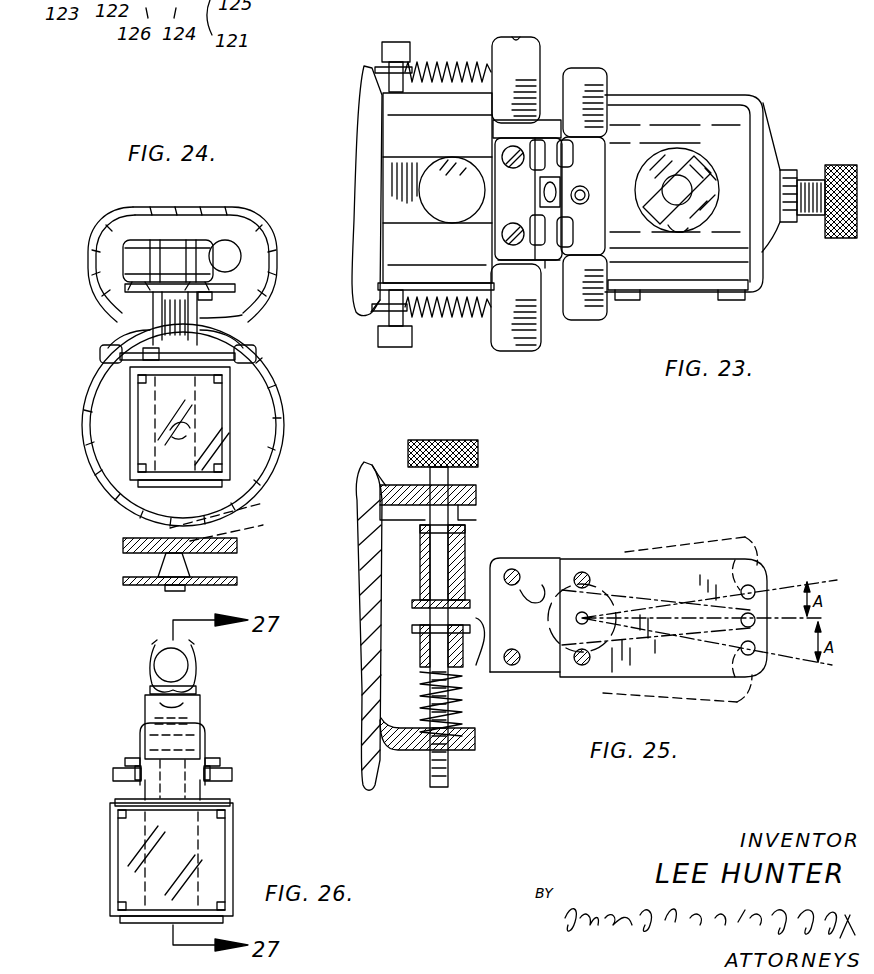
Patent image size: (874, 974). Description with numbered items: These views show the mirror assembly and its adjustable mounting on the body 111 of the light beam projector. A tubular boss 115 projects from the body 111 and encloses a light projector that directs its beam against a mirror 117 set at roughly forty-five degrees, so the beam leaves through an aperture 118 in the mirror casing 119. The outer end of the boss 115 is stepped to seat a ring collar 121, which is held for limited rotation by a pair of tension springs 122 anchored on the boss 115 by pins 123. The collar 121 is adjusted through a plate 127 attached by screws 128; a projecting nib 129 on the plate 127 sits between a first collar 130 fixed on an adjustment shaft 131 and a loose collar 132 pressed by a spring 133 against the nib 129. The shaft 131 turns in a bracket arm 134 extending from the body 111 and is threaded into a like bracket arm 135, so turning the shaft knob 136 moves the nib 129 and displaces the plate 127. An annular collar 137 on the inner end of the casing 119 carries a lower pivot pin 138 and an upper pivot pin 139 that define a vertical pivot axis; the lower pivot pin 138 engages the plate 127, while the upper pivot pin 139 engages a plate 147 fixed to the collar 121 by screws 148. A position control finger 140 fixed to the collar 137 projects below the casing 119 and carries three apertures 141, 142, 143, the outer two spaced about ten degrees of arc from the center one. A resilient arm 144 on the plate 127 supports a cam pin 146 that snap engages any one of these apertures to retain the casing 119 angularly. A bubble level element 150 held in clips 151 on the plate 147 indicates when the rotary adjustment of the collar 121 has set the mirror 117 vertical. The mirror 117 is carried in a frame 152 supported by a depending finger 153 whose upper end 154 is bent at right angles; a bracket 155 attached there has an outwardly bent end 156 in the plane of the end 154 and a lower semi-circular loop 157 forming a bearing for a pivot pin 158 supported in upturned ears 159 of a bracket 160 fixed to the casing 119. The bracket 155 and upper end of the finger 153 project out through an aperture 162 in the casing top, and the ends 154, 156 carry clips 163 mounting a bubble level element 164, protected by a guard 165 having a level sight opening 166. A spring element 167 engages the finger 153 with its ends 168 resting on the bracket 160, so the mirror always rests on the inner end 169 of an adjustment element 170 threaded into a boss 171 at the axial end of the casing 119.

In FIG. 23, the body 111 is at (365, 150).
In FIG. 25, the body 111 is at (366, 656).
In FIG. 23, the tubular boss 115 is at (393, 105).
In FIG. 24, the mirror 117 is at (215, 455).
In FIG. 26, the mirror 117 is at (130, 849).
In FIG. 23, the aperture 118 is at (712, 293).
In FIG. 24, the aperture 118 is at (286, 420).
In FIG. 23, the mirror casing 119 is at (777, 157).
In FIG. 24, the mirror casing 119 is at (97, 468).
In FIG. 23, the ring collar 121 is at (530, 40).
In FIG. 23, the tension springs 122 is at (448, 60).
In FIG. 23, the pins 123 is at (394, 42).
In FIG. 25, the plate 127 is at (542, 566).
In FIG. 25, the screws 128 is at (540, 602).
In FIG. 25, the nib 129 is at (478, 632).
In FIG. 25, the first collar 130 is at (461, 554).
In FIG. 25, the adjustment shaft 131 is at (449, 522).
In FIG. 25, the loose collar 132 is at (422, 648).
In FIG. 25, the spring 133 is at (462, 712).
In FIG. 25, the bracket arm 134 is at (400, 490).
In FIG. 25, the bracket arm 135 is at (406, 748).
In FIG. 25, the shaft knob 136 is at (479, 456).
In FIG. 23, the annular collar 137 is at (600, 70).
In FIG. 25, the lower pivot pin 138 is at (588, 612).
In FIG. 23, the upper pivot pin 139 is at (585, 191).
In FIG. 24, the upper pivot pin 139 is at (240, 546).
In FIG. 25, the upper pivot pin 139 is at (722, 542).
In FIG. 25, the position control finger 140 is at (583, 571).
In FIG. 24, the aperture 141 is at (234, 511).
In FIG. 25, the aperture 141 is at (760, 628).
In FIG. 24, the aperture 142 is at (244, 528).
In FIG. 25, the aperture 142 is at (760, 662).
In FIG. 24, the aperture 143 is at (130, 536).
In FIG. 25, the aperture 143 is at (755, 590).
In FIG. 24, the resilient arm 144 is at (240, 581).
In FIG. 24, the cam pin 146 is at (130, 565).
In FIG. 23, the plate 147 is at (478, 215).
In FIG. 23, the screws 148 is at (501, 157).
In FIG. 23, the bubble level element 150 is at (553, 270).
In FIG. 23, the clips 151 is at (603, 165).
In FIG. 24, the frame 152 is at (148, 487).
In FIG. 26, the frame 152 is at (235, 845).
In FIG. 24, the depending finger 153 is at (152, 320).
In FIG. 26, the depending finger 153 is at (195, 790).
In FIG. 23, the upper end 154 is at (712, 200).
In FIG. 24, the upper end 154 is at (126, 290).
In FIG. 24, the bracket 155 is at (242, 316).
In FIG. 26, the bracket 155 is at (194, 710).
In FIG. 23, the outwardly bent end 156 is at (683, 227).
In FIG. 24, the outwardly bent end 156 is at (232, 291).
In FIG. 26, the outwardly bent end 156 is at (150, 698).
In FIG. 24, the semi-circular loop 157 is at (232, 375).
In FIG. 26, the semi-circular loop 157 is at (150, 805).
In FIG. 26, the pivot pin 158 is at (216, 766).
In FIG. 26, the upturned ears 159 is at (212, 758).
In FIG. 24, the bracket 160 is at (128, 364).
In FIG. 26, the bracket 160 is at (130, 790).
In FIG. 24, the aperture 162 is at (255, 348).
In FIG. 24, the clips 163 is at (194, 240).
In FIG. 26, the clips 163 is at (194, 656).
In FIG. 23, the bubble level element 164 is at (705, 175).
In FIG. 24, the bubble level element 164 is at (236, 252).
In FIG. 26, the bubble level element 164 is at (156, 663).
In FIG. 23, the guard 165 is at (738, 110).
In FIG. 24, the guard 165 is at (101, 235).
In FIG. 23, the level sight opening 166 is at (713, 217).
In FIG. 24, the level sight opening 166 is at (168, 237).
In FIG. 24, the spring element 167 is at (110, 341).
In FIG. 26, the spring element 167 is at (141, 729).
In FIG. 26, the ends 168 is at (115, 771).
In FIG. 24, the inner end 169 is at (156, 445).
In FIG. 23, the adjustment element 170 is at (828, 240).
In FIG. 23, the boss 171 is at (791, 175).